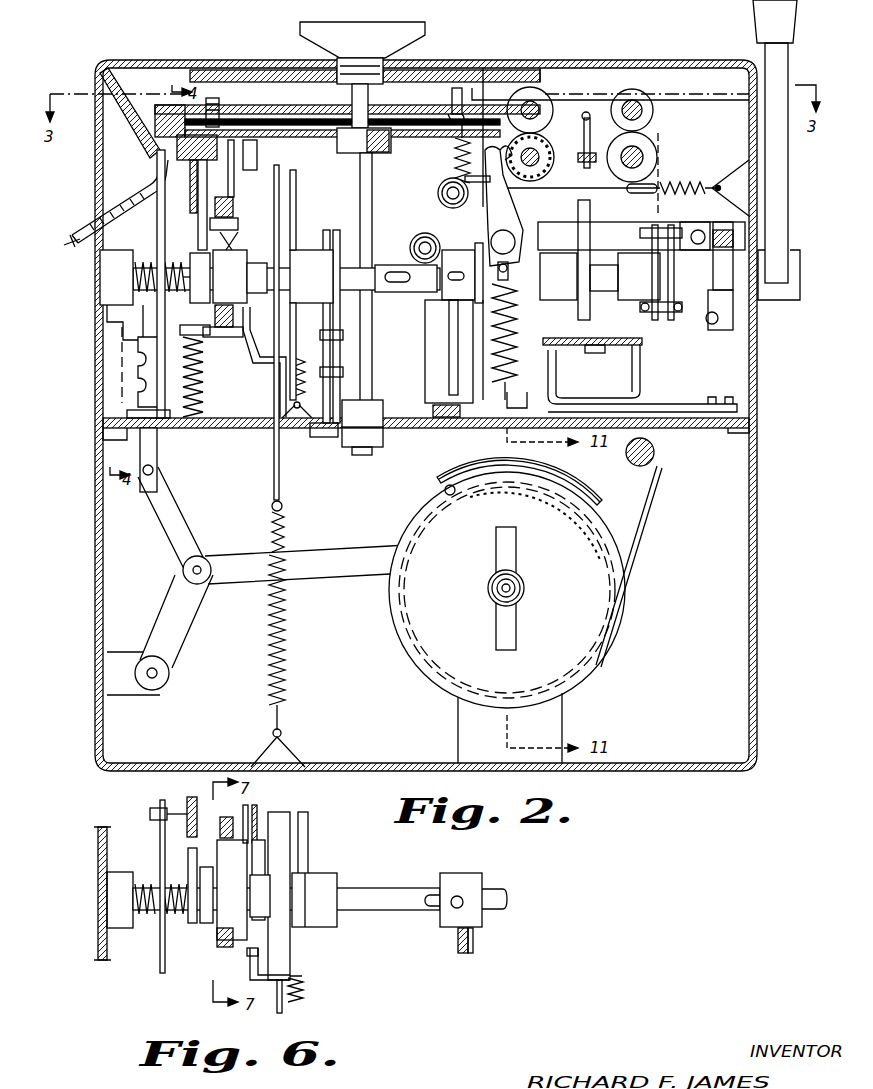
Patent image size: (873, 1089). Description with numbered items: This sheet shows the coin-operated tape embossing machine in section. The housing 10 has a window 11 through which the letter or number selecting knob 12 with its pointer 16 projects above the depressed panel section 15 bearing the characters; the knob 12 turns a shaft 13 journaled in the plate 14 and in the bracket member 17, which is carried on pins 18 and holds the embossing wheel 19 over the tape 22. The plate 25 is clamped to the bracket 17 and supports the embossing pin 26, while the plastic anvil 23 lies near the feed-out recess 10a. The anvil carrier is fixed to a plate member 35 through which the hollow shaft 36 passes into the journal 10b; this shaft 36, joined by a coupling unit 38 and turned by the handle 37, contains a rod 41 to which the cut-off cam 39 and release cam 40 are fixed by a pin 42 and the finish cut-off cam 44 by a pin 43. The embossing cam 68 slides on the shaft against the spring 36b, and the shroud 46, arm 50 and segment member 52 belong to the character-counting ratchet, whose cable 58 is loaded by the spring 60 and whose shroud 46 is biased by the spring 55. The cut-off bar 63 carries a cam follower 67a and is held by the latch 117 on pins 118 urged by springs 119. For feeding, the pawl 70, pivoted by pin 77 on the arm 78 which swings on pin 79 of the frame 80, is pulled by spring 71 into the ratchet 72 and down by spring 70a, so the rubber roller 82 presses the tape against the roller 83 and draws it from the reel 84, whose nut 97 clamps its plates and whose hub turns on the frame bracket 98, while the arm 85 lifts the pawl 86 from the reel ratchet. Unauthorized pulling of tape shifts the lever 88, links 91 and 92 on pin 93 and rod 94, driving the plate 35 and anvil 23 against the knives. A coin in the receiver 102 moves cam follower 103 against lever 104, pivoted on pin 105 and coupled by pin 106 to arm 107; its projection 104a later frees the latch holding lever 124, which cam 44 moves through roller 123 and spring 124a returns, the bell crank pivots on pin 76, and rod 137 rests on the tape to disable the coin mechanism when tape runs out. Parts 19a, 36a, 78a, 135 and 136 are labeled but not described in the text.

In FIG. 2, the housing 10 is at (97, 583).
In FIG. 6, the housing 10 is at (100, 852).
In FIG. 2, the feed-out recess 10a is at (118, 200).
In FIG. 2, the journal 10b is at (118, 307).
In FIG. 6, the journal 10b is at (120, 913).
In FIG. 2, the window 11 is at (220, 60).
In FIG. 2, the letter or number selecting knob 12 is at (388, 24).
In FIG. 2, the shaft 13 is at (372, 222).
In FIG. 2, the plate 14 is at (250, 428).
In FIG. 2, the depressed panel section 15 is at (485, 67).
In FIG. 2, the pointer 16 is at (295, 72).
In FIG. 2, the bracket member 17 is at (170, 110).
In FIG. 2, the pins 18 is at (185, 220).
In FIG. 2, the embossing wheel 19 is at (425, 116).
In FIG. 2, the lower plate 19a is at (395, 150).
In FIG. 2, the tape 22 is at (655, 493).
In FIG. 2, the anvil 23 is at (170, 115).
In FIG. 2, the plate 25 is at (343, 140).
In FIG. 2, the embossing pin 26 is at (260, 162).
In FIG. 2, the plate member 35 is at (155, 322).
In FIG. 6, the plate member 35 is at (160, 957).
In FIG. 2, the shaft 36 is at (387, 263).
In FIG. 6, the shaft 36 is at (385, 886).
In FIG. 6, the spring 36a is at (150, 883).
In FIG. 6, the spring 36b is at (283, 880).
In FIG. 2, the actuating handle 37 is at (781, 190).
In FIG. 2, the coupling unit 38 is at (675, 330).
In FIG. 6, the cut-off cam 39 is at (200, 910).
In FIG. 6, the release cam 40 is at (188, 862).
In FIG. 2, the rod 41 is at (390, 300).
In FIG. 6, the pin 42 is at (197, 943).
In FIG. 6, the pin 43 is at (452, 906).
In FIG. 6, the finish cut-off cam 44 is at (482, 876).
In FIG. 6, the shroud 46 is at (290, 947).
In FIG. 6, the arm 50 is at (262, 848).
In FIG. 6, the member 52 is at (336, 876).
In FIG. 6, the spring 55 is at (304, 993).
In FIG. 2, the cable 58 is at (275, 467).
In FIG. 2, the spring 60 is at (270, 682).
In FIG. 6, the cut-off bar 63 is at (227, 948).
In FIG. 2, the cam follower 67a is at (230, 230).
In FIG. 6, the embossing cam 68 is at (300, 825).
In FIG. 2, the tape feed actuating pawl 70 is at (498, 205).
In FIG. 2, the spring 70a is at (497, 363).
In FIG. 2, the spring 71 is at (690, 186).
In FIG. 2, the ratchet 72 is at (582, 72).
In FIG. 2, the pin 76 is at (320, 440).
In FIG. 2, the pin 77 is at (508, 236).
In FIG. 2, the arm 78 is at (612, 222).
In FIG. 2, the block 78a is at (542, 225).
In FIG. 2, the pin 79 is at (705, 237).
In FIG. 2, the frame 80 is at (673, 115).
In FIG. 2, the rubber roller 82 is at (581, 117).
In FIG. 2, the roller 83 is at (535, 97).
In FIG. 2, the tape reel 84 is at (628, 622).
In FIG. 2, the arm 85 is at (525, 335).
In FIG. 2, the pawl 86 is at (585, 490).
In FIG. 2, the lever 88 is at (318, 553).
In FIG. 2, the link 91 is at (185, 638).
In FIG. 2, the link 92 is at (195, 525).
In FIG. 2, the pin 93 is at (207, 563).
In FIG. 2, the rod 94 is at (145, 452).
In FIG. 2, the nut 97 is at (490, 618).
In FIG. 2, the frame bracket 98 is at (458, 718).
In FIG. 2, the coin receiver 102 is at (608, 338).
In FIG. 2, the cam follower 103 is at (602, 347).
In FIG. 2, the lever 104 is at (630, 378).
In FIG. 2, the projection 104a is at (420, 347).
In FIG. 2, the pivot pin 105 is at (735, 398).
In FIG. 2, the pin 106 is at (445, 430).
In FIG. 2, the arm 107 is at (432, 423).
In FIG. 2, the latch 117 is at (228, 340).
In FIG. 2, the pins 118 is at (120, 290).
In FIG. 2, the springs 119 is at (202, 365).
In FIG. 6, the roller 123 is at (472, 947).
In FIG. 6, the arm 124 is at (460, 935).
In FIG. 2, the spring 124a is at (455, 153).
In FIG. 2, the screw 135 is at (735, 322).
In FIG. 2, the block 136 is at (722, 258).
In FIG. 2, the rod 137 is at (588, 120).